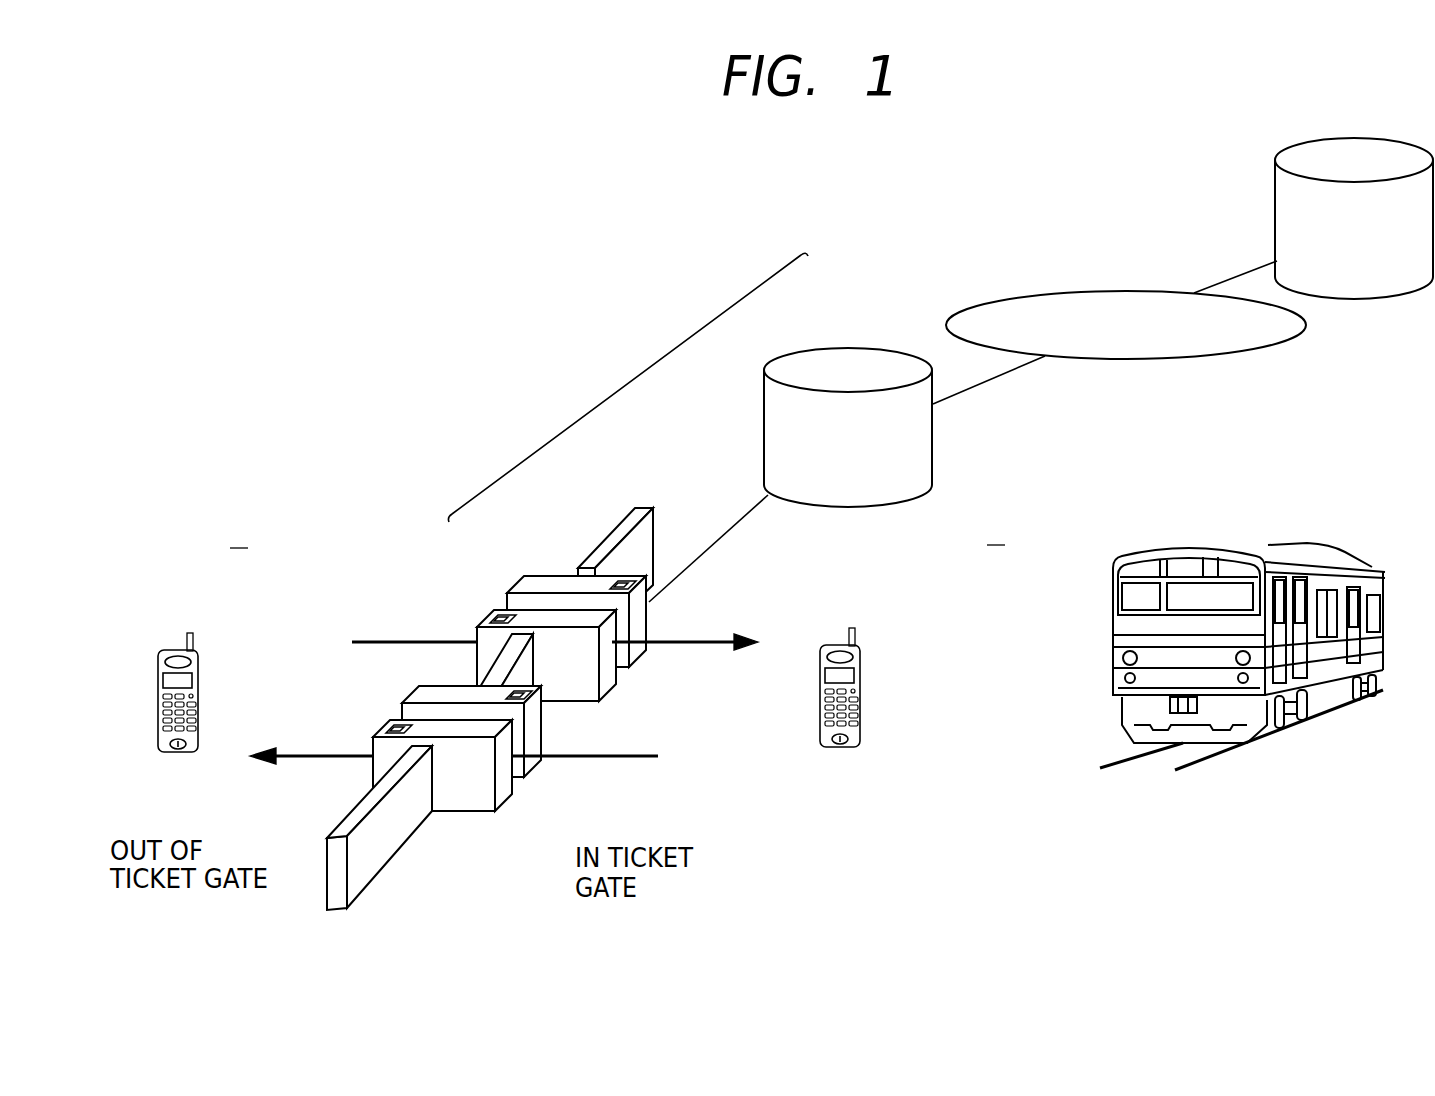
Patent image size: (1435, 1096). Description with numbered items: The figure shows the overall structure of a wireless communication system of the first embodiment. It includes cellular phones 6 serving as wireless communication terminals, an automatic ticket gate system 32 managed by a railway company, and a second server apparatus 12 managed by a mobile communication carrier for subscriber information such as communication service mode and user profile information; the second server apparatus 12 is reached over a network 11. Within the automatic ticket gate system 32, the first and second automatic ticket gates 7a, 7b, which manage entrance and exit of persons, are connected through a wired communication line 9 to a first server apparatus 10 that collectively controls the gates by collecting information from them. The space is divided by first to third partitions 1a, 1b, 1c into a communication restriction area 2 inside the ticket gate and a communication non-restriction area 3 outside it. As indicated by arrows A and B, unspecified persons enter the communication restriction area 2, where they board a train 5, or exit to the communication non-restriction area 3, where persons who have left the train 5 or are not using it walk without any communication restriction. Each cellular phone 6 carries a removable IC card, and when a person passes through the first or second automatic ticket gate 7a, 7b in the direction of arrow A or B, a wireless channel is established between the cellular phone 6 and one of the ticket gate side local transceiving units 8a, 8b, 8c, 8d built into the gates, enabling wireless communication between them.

The first partition 1a is at (612, 542).
The second partition 1b is at (487, 673).
The third partition 1c is at (365, 808).
The communication restriction area 2 is at (996, 531).
The communication non-restriction area 3 is at (239, 534).
The train 5 is at (1255, 543).
The cellular phone 6 is at (158, 687).
The first automatic ticket gate 7a is at (583, 610).
The second automatic ticket gate 7b is at (485, 731).
The ticket gate side local transceiving unit 8a is at (628, 583).
The ticket gate side local transceiving unit 8b is at (500, 615).
The ticket gate side local transceiving unit 8c is at (525, 697).
The ticket gate side local transceiving unit 8d is at (424, 710).
The wired communication line 9 is at (747, 516).
The first server apparatus 10 is at (818, 347).
The network 11 is at (1096, 291).
The second server apparatus 12 is at (1335, 139).
The automatic ticket gate system 32 is at (635, 379).
The arrow A is at (703, 638).
The arrow B is at (627, 752).